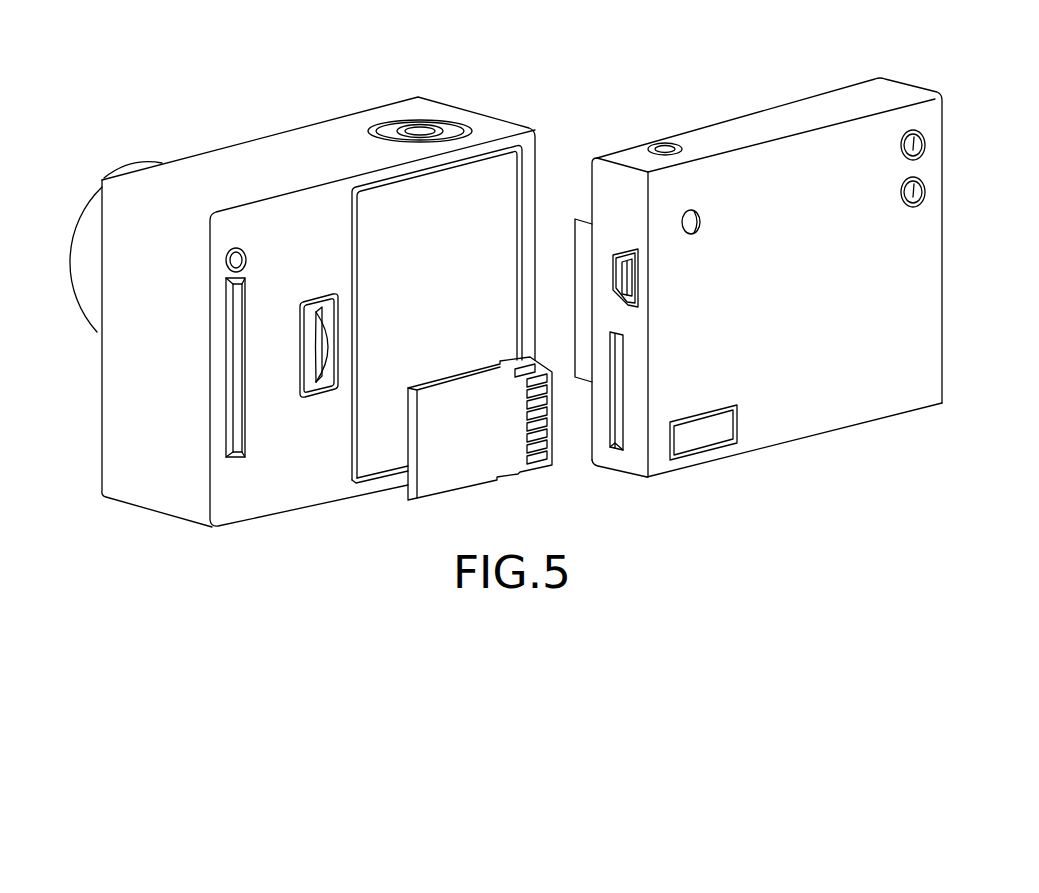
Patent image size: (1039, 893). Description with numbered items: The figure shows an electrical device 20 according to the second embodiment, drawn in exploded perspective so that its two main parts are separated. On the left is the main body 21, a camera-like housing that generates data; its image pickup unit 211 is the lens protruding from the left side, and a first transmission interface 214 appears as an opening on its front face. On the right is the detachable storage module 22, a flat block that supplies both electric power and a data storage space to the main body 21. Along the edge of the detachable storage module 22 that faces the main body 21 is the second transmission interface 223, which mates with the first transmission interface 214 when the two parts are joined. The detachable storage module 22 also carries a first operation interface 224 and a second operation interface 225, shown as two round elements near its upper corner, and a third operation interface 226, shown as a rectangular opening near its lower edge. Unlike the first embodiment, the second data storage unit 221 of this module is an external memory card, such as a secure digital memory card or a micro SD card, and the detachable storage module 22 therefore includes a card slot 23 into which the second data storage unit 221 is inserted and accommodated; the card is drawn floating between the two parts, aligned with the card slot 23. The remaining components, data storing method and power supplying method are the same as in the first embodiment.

The electrical device 20 is at (627, 58).
The main body 21 is at (308, 143).
The image pickup unit 211 is at (85, 268).
The first transmission interface 214 is at (232, 427).
The second data storage unit 221 is at (472, 393).
The detachable storage module 22 is at (820, 110).
The second transmission interface 223 is at (580, 325).
The first operation interface 224 is at (915, 130).
The second operation interface 225 is at (918, 178).
The card slot 23 is at (615, 433).
The third operation interface 226 is at (703, 435).